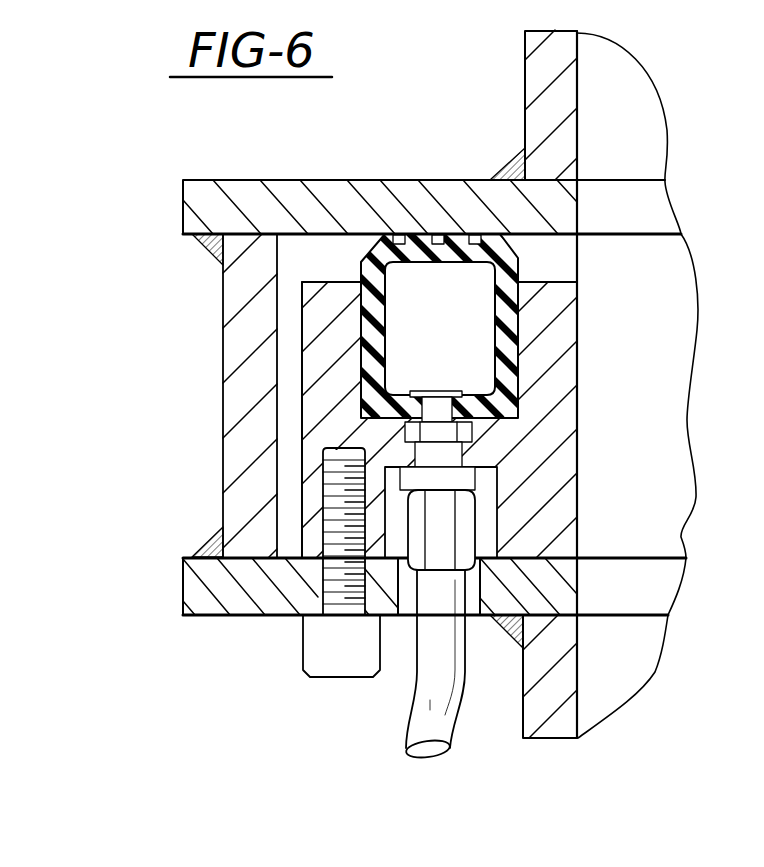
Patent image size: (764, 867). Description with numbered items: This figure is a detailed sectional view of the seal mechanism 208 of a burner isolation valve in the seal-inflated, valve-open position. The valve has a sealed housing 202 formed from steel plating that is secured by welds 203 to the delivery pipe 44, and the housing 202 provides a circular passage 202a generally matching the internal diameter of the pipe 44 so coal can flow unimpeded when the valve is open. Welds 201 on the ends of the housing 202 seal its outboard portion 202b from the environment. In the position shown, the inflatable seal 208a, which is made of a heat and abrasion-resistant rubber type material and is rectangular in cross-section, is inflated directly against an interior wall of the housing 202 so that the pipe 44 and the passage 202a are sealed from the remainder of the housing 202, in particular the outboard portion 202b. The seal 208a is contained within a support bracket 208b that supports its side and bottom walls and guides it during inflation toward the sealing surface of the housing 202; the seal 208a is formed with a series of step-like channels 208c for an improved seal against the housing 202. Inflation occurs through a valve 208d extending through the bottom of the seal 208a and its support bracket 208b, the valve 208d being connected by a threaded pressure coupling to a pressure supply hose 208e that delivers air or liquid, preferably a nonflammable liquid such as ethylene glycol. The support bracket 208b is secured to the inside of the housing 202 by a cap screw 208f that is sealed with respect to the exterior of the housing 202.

The delivery pipe 44 is at (530, 43).
The welds 201 is at (212, 257).
The sealed housing 202 is at (248, 181).
The circular passage 202a is at (637, 191).
The outboard portion 202b is at (320, 251).
The welds 203 is at (518, 630).
The seal mechanism 208 is at (633, 341).
The inflatable seal 208a is at (471, 267).
The support bracket 208b is at (567, 338).
The step-like channels 208c is at (442, 234).
The valve 208d is at (440, 407).
The pressure supply hose 208e is at (424, 702).
The cap screw 208f is at (313, 648).